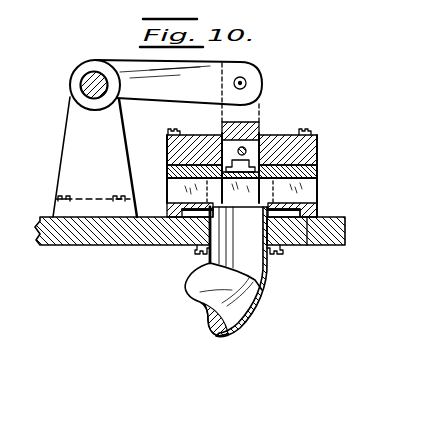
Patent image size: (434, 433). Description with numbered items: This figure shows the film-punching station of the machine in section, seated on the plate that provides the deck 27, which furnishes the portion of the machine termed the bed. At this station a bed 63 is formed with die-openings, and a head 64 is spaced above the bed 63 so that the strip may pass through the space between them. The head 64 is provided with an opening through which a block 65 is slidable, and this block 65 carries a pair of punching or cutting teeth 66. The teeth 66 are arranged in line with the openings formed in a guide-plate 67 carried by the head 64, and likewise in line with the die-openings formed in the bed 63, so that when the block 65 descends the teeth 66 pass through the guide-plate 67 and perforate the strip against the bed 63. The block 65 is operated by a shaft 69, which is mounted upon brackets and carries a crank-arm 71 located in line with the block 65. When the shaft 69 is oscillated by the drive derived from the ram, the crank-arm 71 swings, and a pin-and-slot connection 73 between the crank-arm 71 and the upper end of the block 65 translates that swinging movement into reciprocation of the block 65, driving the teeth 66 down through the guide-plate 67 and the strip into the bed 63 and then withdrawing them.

The deck 27 is at (87, 237).
The bed 63 is at (304, 211).
The head 64 is at (301, 153).
The block 65 is at (223, 134).
The punching or cutting teeth 66 is at (307, 168).
The guide-plate 67 is at (226, 171).
The shaft 69 is at (90, 73).
The crank-arm 71 is at (178, 90).
The pin-and-slot connection 73 is at (247, 83).